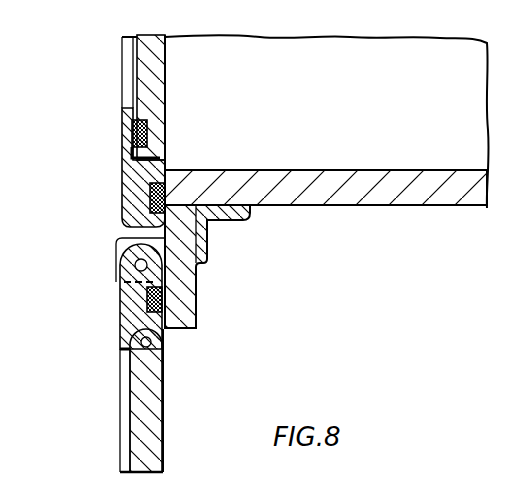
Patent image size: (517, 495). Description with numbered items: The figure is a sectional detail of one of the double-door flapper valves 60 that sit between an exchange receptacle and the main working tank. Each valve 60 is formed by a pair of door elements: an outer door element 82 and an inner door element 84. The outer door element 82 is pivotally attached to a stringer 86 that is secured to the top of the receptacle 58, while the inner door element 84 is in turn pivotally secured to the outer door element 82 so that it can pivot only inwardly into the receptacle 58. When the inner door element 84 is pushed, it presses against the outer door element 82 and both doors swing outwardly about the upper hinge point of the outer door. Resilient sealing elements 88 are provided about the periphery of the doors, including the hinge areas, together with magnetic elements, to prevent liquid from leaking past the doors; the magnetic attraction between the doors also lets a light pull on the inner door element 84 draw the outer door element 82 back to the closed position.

The receptacle 58 is at (350, 87).
The double-door flapper valve 60 is at (112, 78).
The outer door element 82 is at (127, 173).
The inner door element 84 is at (155, 82).
The stringer 86 is at (188, 293).
The resilient sealing element 88 is at (143, 133).